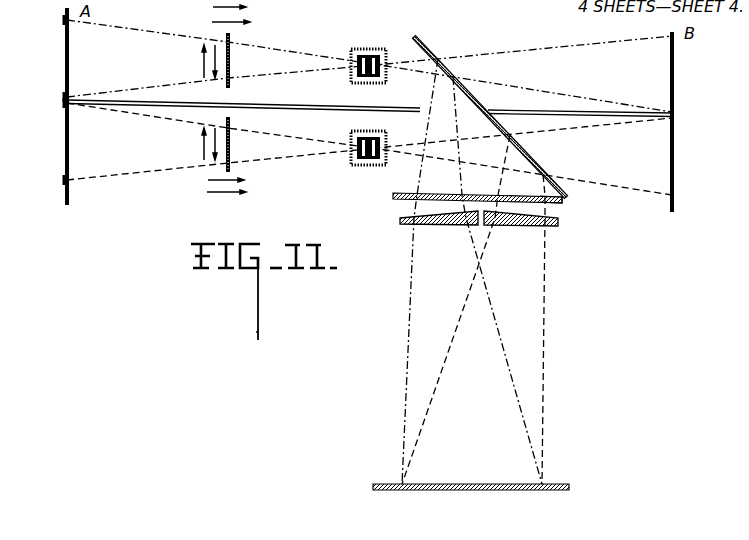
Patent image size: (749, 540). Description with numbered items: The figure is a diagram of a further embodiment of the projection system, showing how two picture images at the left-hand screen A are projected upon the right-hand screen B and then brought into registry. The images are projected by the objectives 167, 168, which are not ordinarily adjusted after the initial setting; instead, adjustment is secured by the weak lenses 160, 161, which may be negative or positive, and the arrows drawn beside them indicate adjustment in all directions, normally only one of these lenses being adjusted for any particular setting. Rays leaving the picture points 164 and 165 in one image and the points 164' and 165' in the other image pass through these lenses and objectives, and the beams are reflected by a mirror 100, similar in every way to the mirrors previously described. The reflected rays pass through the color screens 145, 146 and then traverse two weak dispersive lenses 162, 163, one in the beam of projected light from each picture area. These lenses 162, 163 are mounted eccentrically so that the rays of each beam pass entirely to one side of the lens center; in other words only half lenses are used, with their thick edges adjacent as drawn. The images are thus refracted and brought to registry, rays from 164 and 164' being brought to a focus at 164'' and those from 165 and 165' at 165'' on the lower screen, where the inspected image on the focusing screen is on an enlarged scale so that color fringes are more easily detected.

The picture area point 164 is at (347, 60).
The picture area point 165 is at (347, 69).
The picture area point 164' is at (347, 145).
The picture area point 165' is at (347, 153).
The weak lens 160 is at (230, 41).
The weak lens 161 is at (230, 165).
The objective 167 is at (378, 44).
The objective 168 is at (379, 165).
The mirror 100 is at (420, 44).
The color screen 145 is at (393, 197).
The color screen 146 is at (562, 201).
The weak dispersive lens 162 is at (400, 219).
The weak dispersive lens 163 is at (558, 225).
The focus point 164'' is at (447, 285).
The focus point 165'' is at (510, 294).